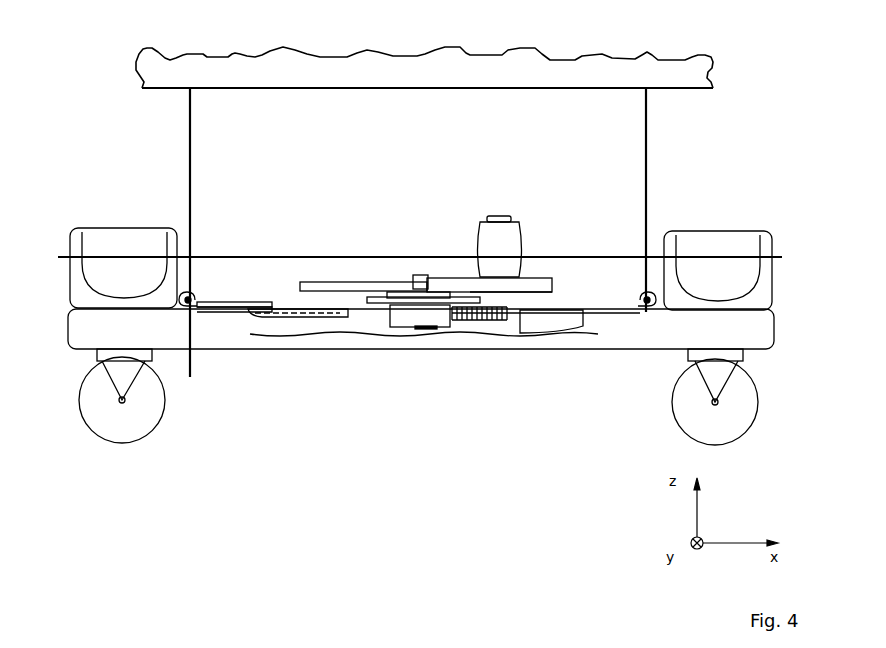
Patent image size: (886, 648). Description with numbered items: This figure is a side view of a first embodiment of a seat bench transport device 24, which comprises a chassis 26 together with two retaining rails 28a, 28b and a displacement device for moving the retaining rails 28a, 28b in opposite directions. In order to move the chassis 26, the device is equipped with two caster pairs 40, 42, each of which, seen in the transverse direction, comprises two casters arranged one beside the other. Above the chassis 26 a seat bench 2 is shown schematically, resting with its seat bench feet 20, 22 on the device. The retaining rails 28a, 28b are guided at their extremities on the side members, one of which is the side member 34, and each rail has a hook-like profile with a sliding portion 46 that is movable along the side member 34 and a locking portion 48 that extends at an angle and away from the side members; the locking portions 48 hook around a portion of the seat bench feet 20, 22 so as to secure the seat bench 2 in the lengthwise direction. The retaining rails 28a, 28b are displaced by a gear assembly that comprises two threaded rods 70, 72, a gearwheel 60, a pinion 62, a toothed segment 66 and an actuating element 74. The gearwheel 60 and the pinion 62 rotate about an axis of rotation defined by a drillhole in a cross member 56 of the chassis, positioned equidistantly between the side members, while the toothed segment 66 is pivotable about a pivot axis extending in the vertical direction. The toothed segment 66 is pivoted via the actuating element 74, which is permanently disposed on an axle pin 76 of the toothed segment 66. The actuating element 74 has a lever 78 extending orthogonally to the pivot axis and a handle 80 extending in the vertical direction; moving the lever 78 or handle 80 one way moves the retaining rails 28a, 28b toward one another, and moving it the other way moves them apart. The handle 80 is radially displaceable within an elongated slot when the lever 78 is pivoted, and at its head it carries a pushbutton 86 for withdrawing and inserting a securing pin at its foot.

The seat bench 2 is at (712, 75).
The seat bench transport device 24 is at (49, 109).
The seat bench foot 20 is at (193, 244).
The seat bench foot 22 is at (645, 314).
The chassis 26 is at (778, 312).
The side member 34 is at (599, 337).
The caster pair 40 is at (113, 437).
The caster pair 42 is at (685, 432).
The retaining rail 28a is at (193, 290).
The retaining rail 28b is at (650, 290).
The sliding portion 46 is at (216, 300).
The locking portion 48 is at (199, 297).
The threaded rod 72 is at (292, 318).
The axle pin 76 is at (420, 275).
The lever 78 is at (455, 278).
The handle 80 is at (508, 268).
The actuating element 74 is at (518, 223).
The pushbutton 86 is at (503, 216).
The toothed segment 66 is at (384, 300).
The gearwheel 60 is at (410, 318).
The pinion 62 is at (422, 324).
The threaded rod 70 is at (512, 318).
The cross member 56 is at (31, 645).